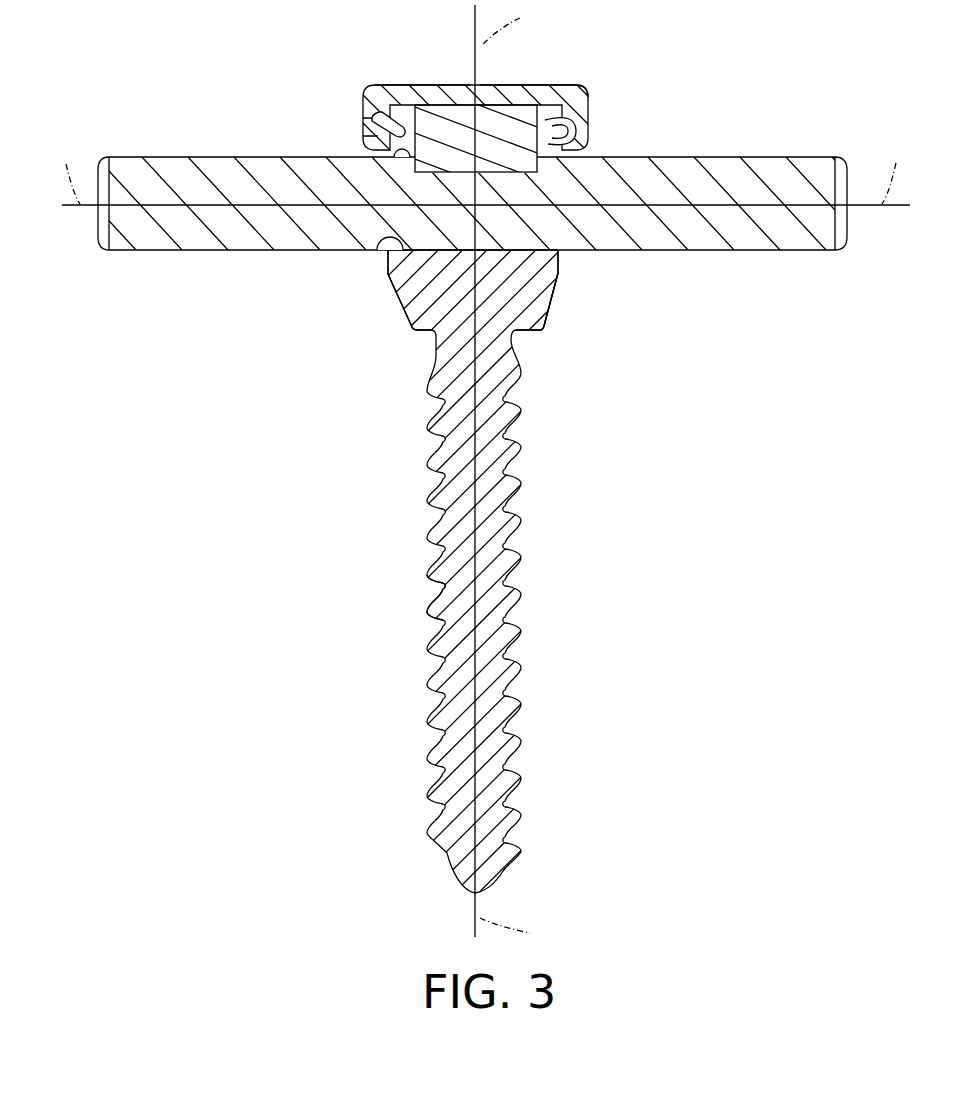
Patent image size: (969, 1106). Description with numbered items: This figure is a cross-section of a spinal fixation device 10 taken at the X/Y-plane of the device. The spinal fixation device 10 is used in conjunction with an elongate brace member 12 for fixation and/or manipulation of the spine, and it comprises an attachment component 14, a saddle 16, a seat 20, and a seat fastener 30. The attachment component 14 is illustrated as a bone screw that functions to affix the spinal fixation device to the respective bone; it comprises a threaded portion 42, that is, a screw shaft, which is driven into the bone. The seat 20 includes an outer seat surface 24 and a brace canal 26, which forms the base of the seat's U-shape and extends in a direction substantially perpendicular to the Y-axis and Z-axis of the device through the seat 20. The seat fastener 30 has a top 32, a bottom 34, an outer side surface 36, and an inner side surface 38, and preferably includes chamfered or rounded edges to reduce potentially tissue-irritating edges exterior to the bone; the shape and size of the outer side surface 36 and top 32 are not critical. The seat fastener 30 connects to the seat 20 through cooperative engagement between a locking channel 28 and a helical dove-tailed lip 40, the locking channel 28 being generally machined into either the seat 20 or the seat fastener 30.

The spinal fixation device 10 is at (483, 473).
The elongate brace member 12 is at (765, 157).
The attachment component 14 is at (484, 575).
The saddle 16 is at (467, 112).
The seat 20 is at (517, 301).
The outer seat surface 24 is at (560, 272).
The brace canal 26 is at (386, 251).
The locking channel 28 is at (582, 136).
The seat fastener 30 is at (468, 82).
The top 32 is at (402, 86).
The bottom 34 is at (563, 98).
The outer side surface 36 is at (366, 128).
The inner side surface 38 is at (396, 154).
The helical dove-tailed lip 40 is at (372, 108).
The threaded portion 42 is at (406, 609).